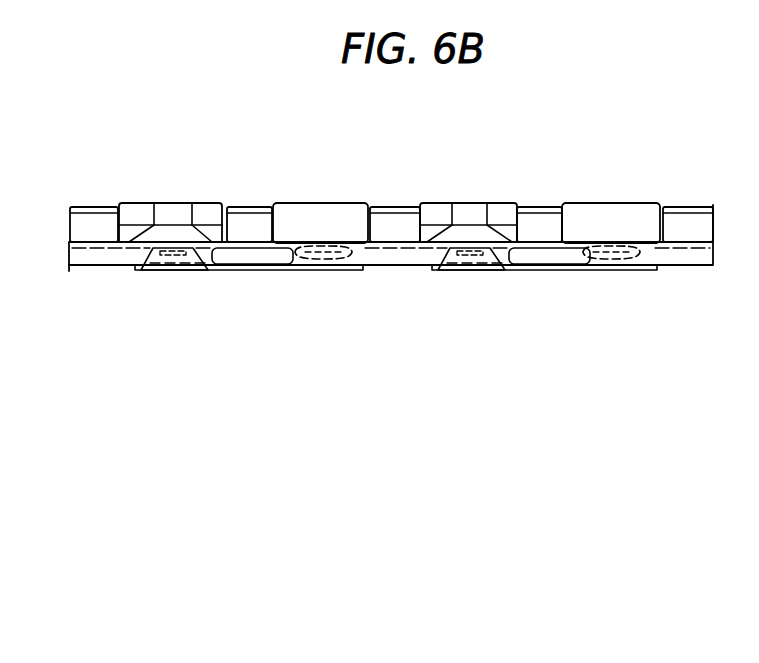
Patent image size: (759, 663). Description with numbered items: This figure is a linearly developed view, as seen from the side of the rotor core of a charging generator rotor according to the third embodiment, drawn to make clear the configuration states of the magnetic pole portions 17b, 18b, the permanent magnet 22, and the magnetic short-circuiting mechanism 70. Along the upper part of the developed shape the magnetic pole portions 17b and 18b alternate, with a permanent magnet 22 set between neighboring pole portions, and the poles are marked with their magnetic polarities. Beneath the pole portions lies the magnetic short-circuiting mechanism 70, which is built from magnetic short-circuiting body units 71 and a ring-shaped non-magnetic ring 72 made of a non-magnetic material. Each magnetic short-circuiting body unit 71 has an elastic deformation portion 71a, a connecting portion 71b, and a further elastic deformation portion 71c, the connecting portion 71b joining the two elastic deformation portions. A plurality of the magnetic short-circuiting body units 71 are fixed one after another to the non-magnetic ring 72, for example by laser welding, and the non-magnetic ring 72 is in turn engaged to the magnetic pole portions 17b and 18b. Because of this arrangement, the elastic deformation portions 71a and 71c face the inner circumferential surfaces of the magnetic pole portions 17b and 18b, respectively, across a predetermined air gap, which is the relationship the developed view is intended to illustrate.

The permanent magnet 22 is at (85, 213).
The magnetic pole portion 18b is at (171, 210).
The magnetic pole portion 17b is at (316, 215).
The magnetic short-circuiting mechanism 70 is at (488, 281).
The magnetic short-circuiting body unit 71 is at (652, 266).
The elastic deformation portion 71a is at (325, 261).
The connecting portion 71b is at (248, 271).
The elastic deformation portion 71c is at (143, 271).
The non-magnetic ring 72 is at (700, 266).